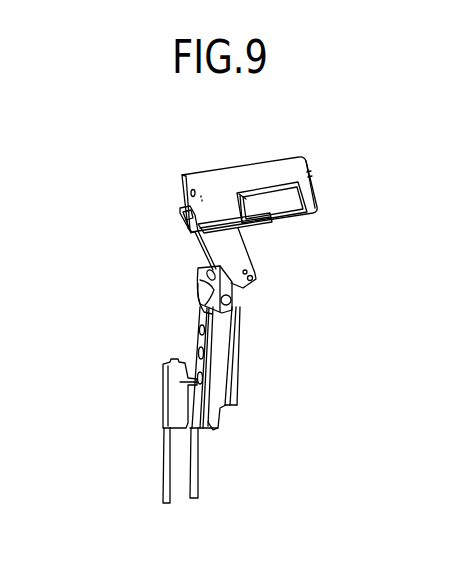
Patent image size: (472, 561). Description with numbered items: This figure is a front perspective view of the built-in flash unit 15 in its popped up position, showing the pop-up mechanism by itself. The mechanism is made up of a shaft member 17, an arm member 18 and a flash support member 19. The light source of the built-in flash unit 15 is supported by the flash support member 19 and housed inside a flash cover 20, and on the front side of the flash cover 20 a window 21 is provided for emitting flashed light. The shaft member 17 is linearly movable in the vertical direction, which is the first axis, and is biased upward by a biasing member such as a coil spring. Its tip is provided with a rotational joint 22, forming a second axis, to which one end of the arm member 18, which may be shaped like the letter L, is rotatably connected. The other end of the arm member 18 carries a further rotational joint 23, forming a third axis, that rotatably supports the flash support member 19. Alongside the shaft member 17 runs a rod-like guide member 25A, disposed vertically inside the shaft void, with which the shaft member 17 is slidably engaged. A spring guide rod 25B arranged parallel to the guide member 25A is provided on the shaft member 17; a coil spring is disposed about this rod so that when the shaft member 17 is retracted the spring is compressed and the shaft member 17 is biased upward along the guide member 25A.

The built-in flash unit 15 is at (112, 327).
The shaft member 17 is at (238, 377).
The arm member 18 is at (257, 267).
The flash support member 19 is at (270, 226).
The flash cover 20 is at (283, 168).
The window 21 is at (260, 200).
The rotational joint 22 is at (213, 300).
The rotational joint 23 is at (183, 220).
The guide member 25A is at (163, 464).
The spring guide rod 25B is at (201, 468).